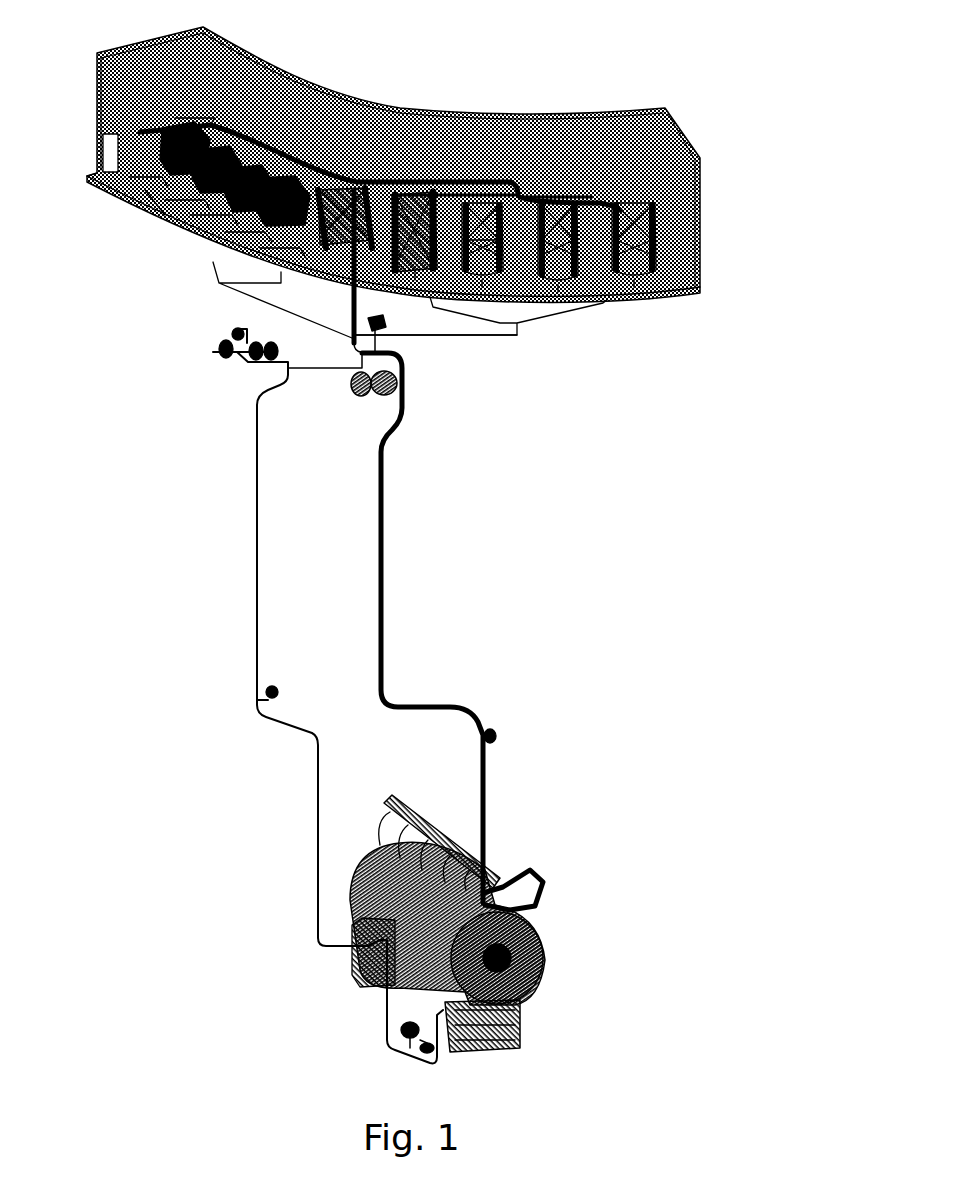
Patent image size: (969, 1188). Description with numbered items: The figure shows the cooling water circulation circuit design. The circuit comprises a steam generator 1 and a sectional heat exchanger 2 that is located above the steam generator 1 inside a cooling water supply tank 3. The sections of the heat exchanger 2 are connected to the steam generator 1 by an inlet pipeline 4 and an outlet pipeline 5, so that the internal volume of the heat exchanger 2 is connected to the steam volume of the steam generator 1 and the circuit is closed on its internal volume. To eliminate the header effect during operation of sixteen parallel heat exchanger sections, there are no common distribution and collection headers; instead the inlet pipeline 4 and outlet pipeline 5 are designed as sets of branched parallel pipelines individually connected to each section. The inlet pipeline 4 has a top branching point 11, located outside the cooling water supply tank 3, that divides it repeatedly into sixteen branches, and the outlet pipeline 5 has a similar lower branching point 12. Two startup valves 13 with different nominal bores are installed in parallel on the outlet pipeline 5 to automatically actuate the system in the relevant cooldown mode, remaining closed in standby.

The steam generator 1 is at (537, 950).
The sectional heat exchanger 2 is at (172, 232).
The cooling water supply tank 3 is at (635, 300).
The inlet pipeline 4 is at (378, 470).
The outlet pipeline 5 is at (253, 470).
The top branching point 11 is at (410, 107).
The lower branching point 12 is at (358, 355).
The startup valves 13 is at (423, 1045).